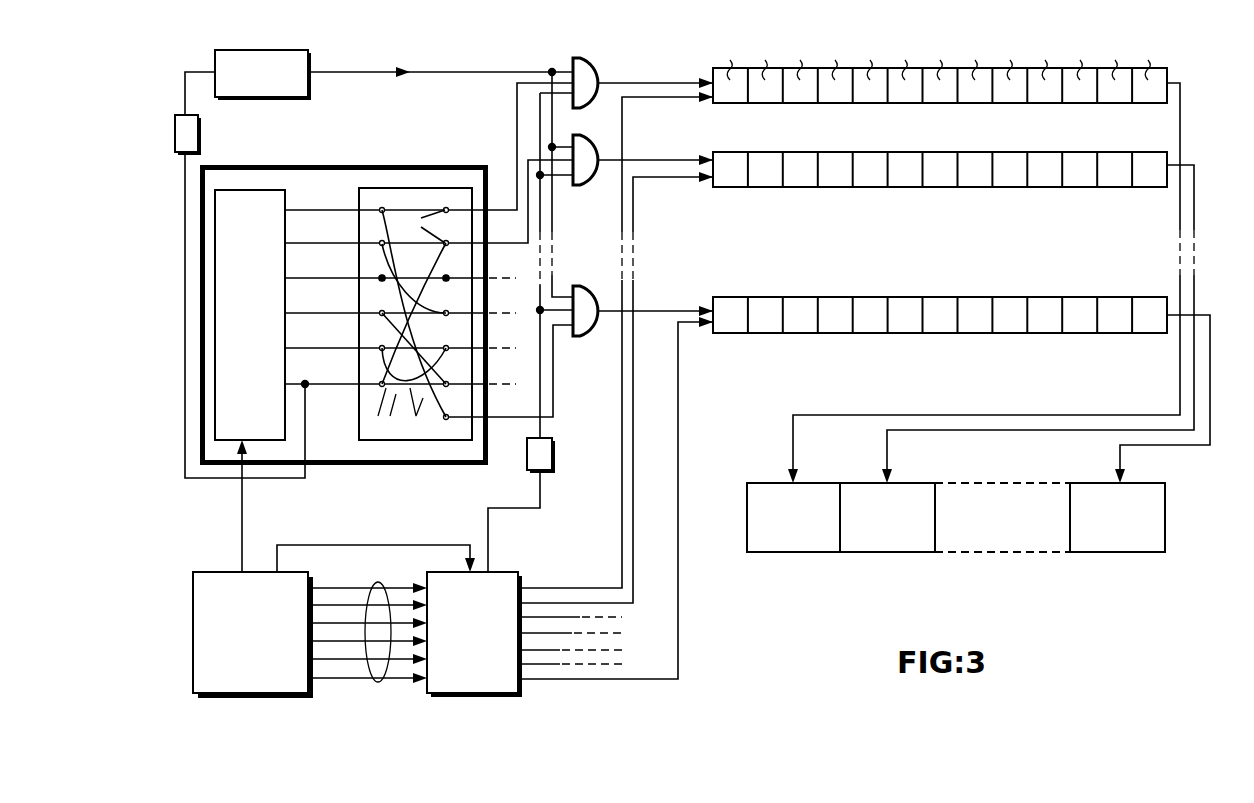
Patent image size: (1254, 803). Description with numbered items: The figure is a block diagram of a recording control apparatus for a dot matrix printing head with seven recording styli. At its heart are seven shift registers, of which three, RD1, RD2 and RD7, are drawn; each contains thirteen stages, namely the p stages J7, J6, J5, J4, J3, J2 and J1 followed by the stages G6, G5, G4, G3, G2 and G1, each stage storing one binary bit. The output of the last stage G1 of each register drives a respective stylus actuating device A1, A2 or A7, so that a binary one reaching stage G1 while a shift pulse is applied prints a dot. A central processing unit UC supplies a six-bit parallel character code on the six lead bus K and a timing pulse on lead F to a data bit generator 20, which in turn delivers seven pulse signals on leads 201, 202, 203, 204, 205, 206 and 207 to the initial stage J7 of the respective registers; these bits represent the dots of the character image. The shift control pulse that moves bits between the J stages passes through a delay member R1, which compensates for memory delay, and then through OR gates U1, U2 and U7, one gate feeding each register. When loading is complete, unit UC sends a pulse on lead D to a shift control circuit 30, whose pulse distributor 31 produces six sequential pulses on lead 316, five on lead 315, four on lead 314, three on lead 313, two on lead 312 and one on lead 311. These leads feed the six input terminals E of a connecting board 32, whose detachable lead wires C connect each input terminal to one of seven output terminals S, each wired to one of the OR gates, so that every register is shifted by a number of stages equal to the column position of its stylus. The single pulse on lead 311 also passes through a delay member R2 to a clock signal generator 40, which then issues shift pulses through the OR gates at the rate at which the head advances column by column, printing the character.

The clock signal generator 40 is at (283, 97).
The delay member R2 is at (199, 137).
The shift control circuit 30 is at (325, 465).
The pulse distributor 31 is at (255, 197).
The pulse distributor output lead 316 is at (287, 210).
The pulse distributor output lead 315 is at (287, 243).
The pulse distributor output lead 314 is at (287, 278).
The pulse distributor output lead 313 is at (287, 313).
The pulse distributor output lead 312 is at (287, 348).
The pulse distributor output lead 311 is at (287, 384).
The connecting board 32 is at (423, 346).
The output terminals S is at (424, 226).
The input terminals E is at (382, 412).
The detachable lead wires C is at (415, 412).
The OR gate U1 is at (584, 61).
The OR gate U2 is at (584, 141).
The OR gate U7 is at (583, 290).
The delay member R1 is at (527, 463).
The data bit generator 20 is at (493, 582).
The lead 201 is at (622, 500).
The lead 202 is at (632, 528).
The lead 203 is at (538, 617).
The lead 204 is at (567, 634).
The lead 205 is at (540, 645).
The lead 206 is at (577, 663).
The lead 207 is at (678, 653).
The central processing unit UC is at (218, 582).
The lead D is at (242, 500).
The lead F is at (360, 544).
The six lead bus K is at (367, 622).
The shift register RD1 is at (946, 261).
The shift register RD2 is at (892, 190).
The shift register RD7 is at (893, 335).
The register stage J7 is at (727, 59).
The register stage J6 is at (762, 59).
The register stage J5 is at (797, 59).
The register stage J4 is at (832, 59).
The register stage J3 is at (867, 59).
The register stage J2 is at (902, 59).
The register stage J1 is at (937, 59).
The register stage G6 is at (973, 59).
The register stage G5 is at (1008, 59).
The register stage G4 is at (1043, 59).
The register stage G3 is at (1078, 59).
The register stage G2 is at (1113, 59).
The last register stage G1 is at (1146, 59).
The stylus actuating device A1 is at (786, 547).
The stylus actuating device A2 is at (890, 547).
The stylus actuating device A7 is at (1120, 547).